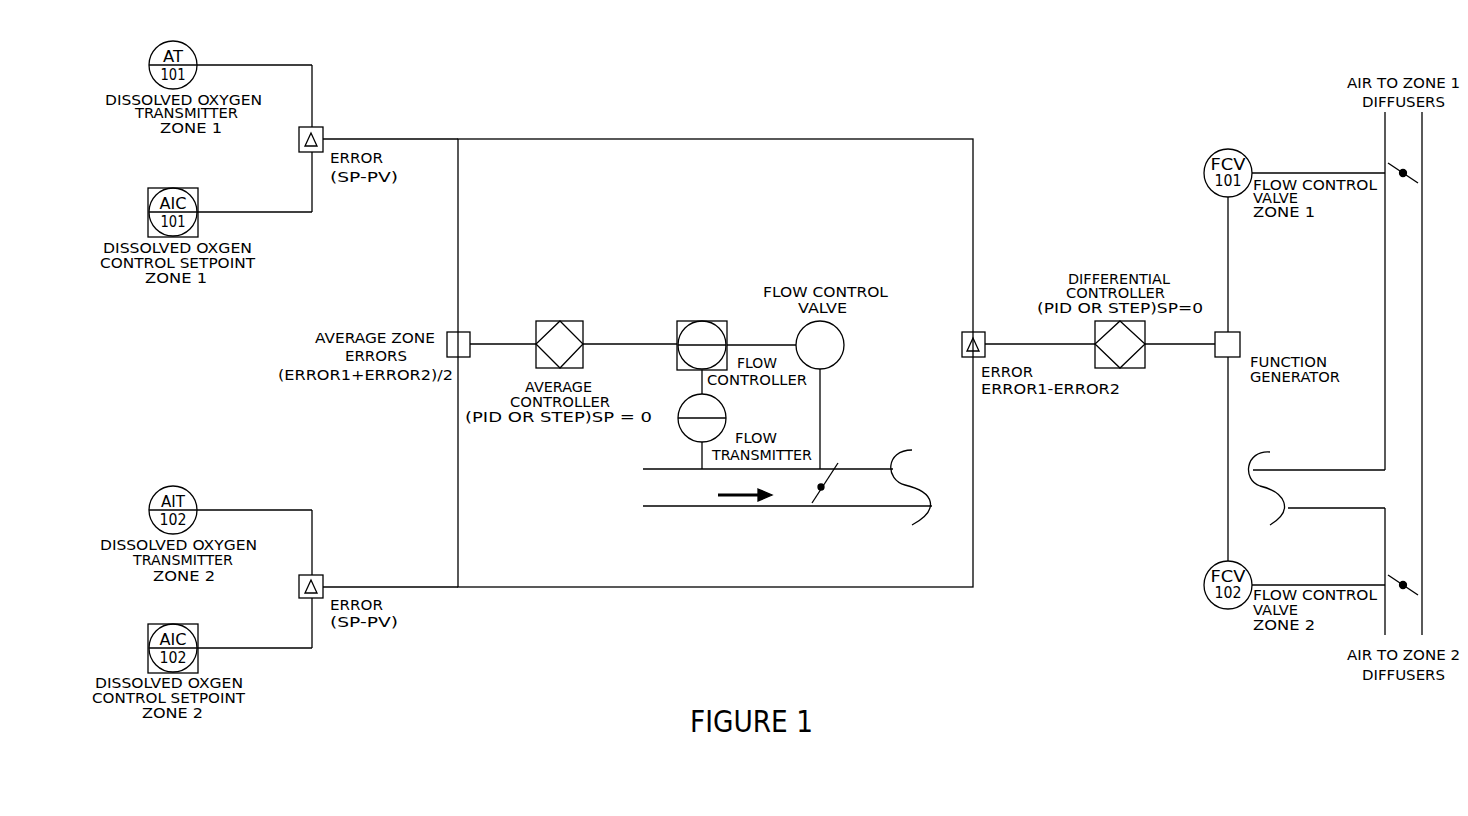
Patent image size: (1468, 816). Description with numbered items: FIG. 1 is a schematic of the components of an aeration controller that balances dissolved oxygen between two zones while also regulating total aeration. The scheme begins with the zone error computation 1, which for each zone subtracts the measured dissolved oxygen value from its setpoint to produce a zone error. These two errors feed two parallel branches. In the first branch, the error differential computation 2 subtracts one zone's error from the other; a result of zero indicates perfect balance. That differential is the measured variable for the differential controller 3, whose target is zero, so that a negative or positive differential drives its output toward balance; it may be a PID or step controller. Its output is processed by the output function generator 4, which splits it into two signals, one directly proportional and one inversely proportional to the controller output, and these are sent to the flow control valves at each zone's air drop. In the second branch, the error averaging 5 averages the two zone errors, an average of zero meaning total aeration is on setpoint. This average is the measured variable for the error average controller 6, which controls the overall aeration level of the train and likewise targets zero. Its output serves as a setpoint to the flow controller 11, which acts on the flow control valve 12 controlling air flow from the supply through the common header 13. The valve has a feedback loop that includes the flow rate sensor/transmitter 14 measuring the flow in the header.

The zone error computation 1 is at (341, 341).
The error differential computation 2 is at (932, 247).
The differential controller 3 is at (1141, 366).
The output function generator 4 is at (1256, 327).
The error averaging 5 is at (484, 315).
The error average controller 6 is at (587, 314).
The flow controller 11 is at (725, 303).
The flow control valve 12 is at (832, 471).
The common header 13 is at (779, 506).
The flow rate sensor/transmitter 14 is at (650, 429).